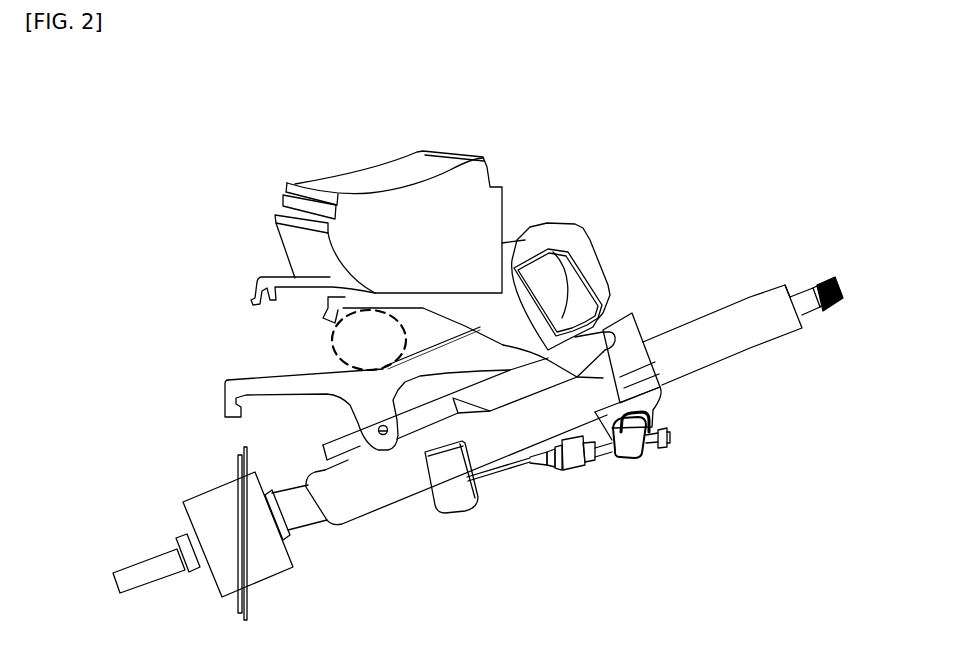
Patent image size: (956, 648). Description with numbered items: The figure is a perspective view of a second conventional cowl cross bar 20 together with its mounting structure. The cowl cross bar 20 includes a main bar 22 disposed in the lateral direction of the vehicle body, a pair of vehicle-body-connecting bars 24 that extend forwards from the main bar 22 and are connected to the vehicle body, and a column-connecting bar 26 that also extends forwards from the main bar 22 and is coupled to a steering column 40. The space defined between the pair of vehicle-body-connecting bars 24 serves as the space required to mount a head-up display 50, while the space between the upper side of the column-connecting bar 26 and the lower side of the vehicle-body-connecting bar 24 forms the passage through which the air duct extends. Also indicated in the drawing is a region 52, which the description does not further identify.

The second conventional cowl cross bar 20 is at (525, 240).
The main bar 22 is at (568, 240).
The vehicle-body-connecting bars 24 is at (398, 290).
The column-connecting bar 26 is at (363, 390).
The steering column 40 is at (385, 490).
The head-up display (HUD) 50 is at (407, 177).
The mounting portion 52 is at (438, 297).